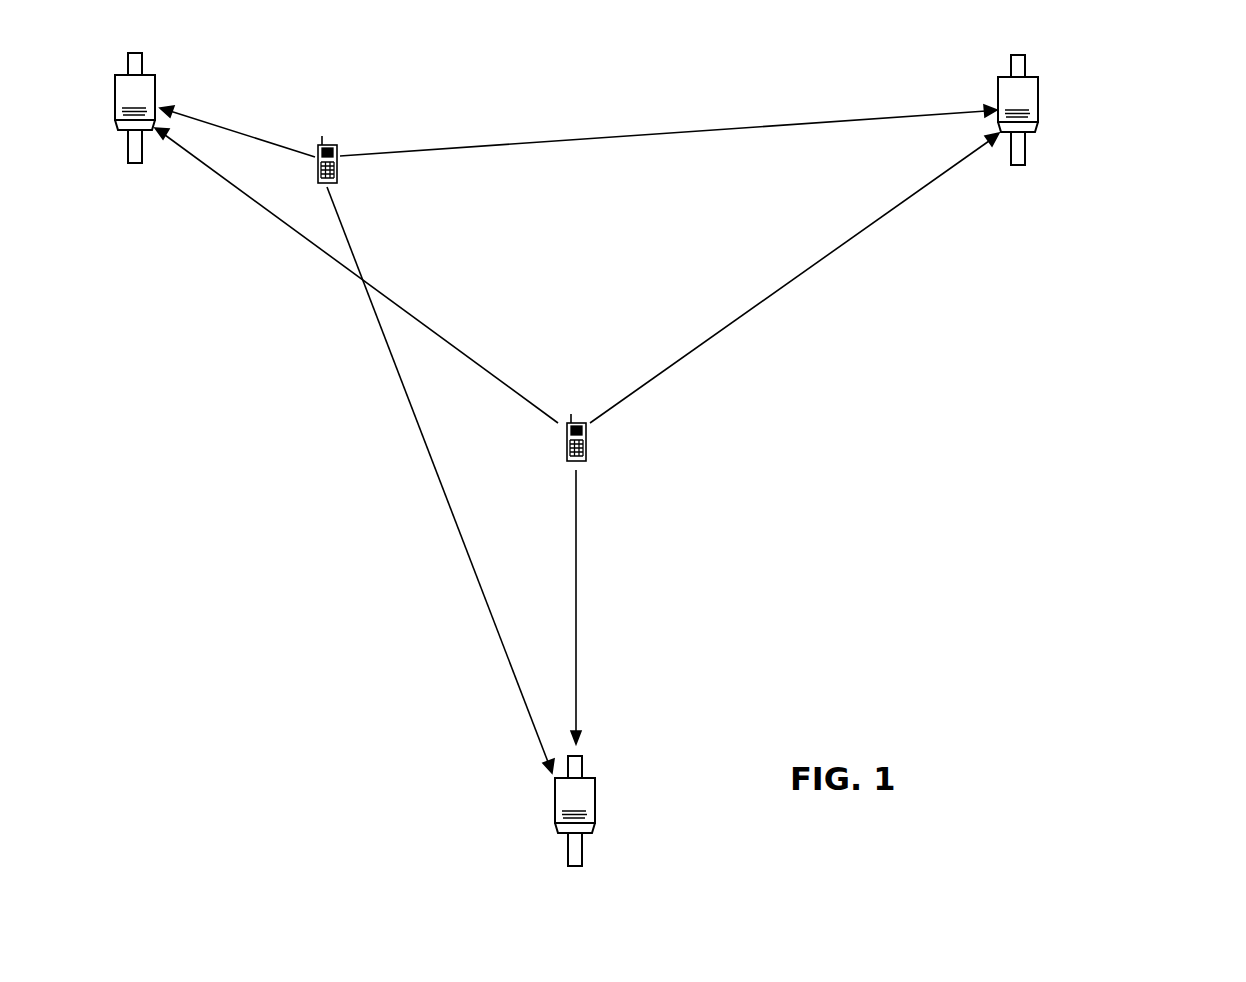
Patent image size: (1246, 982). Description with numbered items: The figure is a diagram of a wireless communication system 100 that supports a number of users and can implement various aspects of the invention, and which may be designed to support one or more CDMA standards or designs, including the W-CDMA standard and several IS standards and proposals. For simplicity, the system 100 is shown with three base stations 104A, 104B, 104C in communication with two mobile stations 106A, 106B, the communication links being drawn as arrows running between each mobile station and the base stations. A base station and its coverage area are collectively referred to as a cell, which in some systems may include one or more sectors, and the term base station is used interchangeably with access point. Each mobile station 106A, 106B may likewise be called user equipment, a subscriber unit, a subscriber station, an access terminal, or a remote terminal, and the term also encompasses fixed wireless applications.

The wireless communication system 100 is at (1167, 72).
The base station 104A is at (145, 74).
The base station 104B is at (1030, 76).
The base station 104C is at (589, 777).
The mobile station 106A is at (334, 144).
The mobile station 106B is at (565, 462).